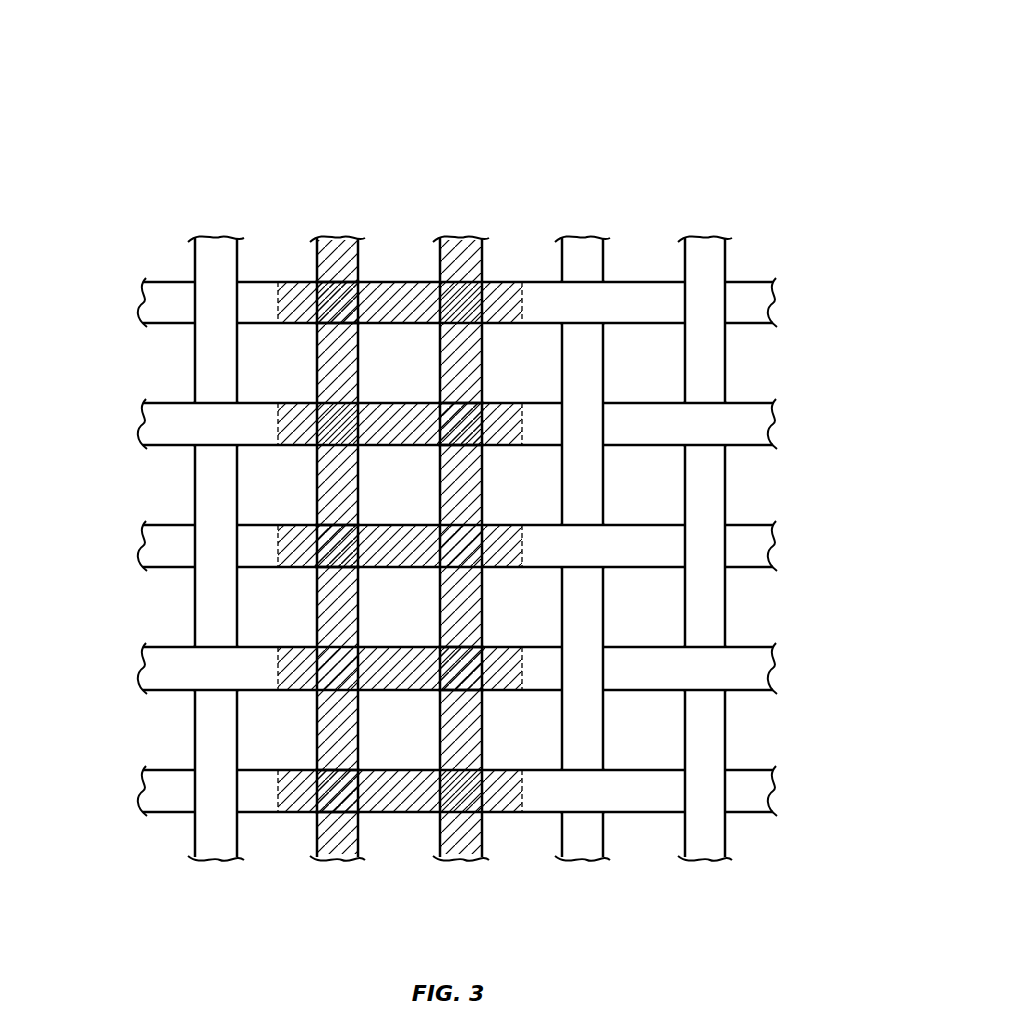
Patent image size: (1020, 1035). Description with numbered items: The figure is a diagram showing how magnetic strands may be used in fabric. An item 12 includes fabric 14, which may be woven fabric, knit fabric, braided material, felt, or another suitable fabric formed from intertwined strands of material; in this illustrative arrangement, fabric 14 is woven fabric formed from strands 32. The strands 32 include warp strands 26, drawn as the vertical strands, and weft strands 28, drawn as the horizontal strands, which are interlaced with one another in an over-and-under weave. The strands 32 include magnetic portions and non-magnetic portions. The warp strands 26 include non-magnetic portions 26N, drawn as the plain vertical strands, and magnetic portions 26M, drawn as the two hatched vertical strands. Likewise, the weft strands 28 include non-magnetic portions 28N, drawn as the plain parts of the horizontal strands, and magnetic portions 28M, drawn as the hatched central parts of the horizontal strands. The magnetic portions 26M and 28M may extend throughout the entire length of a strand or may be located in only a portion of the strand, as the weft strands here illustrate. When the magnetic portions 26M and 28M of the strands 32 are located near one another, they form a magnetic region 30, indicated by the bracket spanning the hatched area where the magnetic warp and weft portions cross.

The item 12 is at (657, 78).
The fabric 14 is at (750, 818).
The warp strands 26 is at (427, 486).
The magnetic portions 26M is at (356, 527).
The non-magnetic portions 26N is at (200, 250).
The weft strands 28 is at (404, 572).
The magnetic portions 28M is at (392, 825).
The non-magnetic portions 28N is at (638, 828).
The magnetic region 30 is at (312, 878).
The strands 32 is at (707, 332).